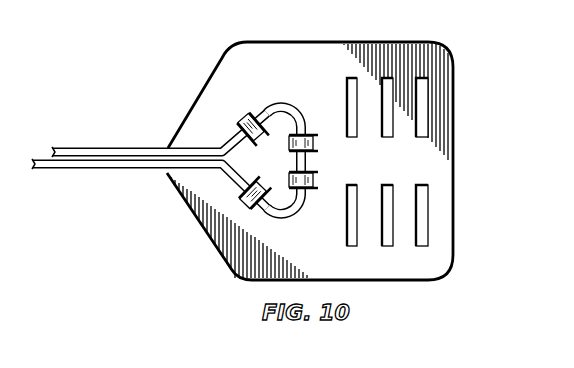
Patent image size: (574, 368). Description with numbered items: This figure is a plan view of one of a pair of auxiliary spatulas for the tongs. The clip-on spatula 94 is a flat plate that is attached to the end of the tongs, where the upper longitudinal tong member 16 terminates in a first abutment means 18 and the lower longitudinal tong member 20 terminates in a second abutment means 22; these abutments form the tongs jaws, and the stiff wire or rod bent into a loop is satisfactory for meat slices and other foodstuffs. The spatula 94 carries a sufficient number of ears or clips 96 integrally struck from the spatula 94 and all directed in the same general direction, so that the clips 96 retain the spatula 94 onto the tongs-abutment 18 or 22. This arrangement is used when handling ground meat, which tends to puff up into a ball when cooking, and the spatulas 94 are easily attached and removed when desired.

The clip-on spatula 94 is at (449, 199).
The upper longitudinal tong member 16 is at (68, 147).
The lower longitudinal tong member 20 is at (149, 153).
The first abutment means 18 is at (279, 103).
The second abutment means 22 is at (314, 110).
The ears or clips 96 is at (242, 117).